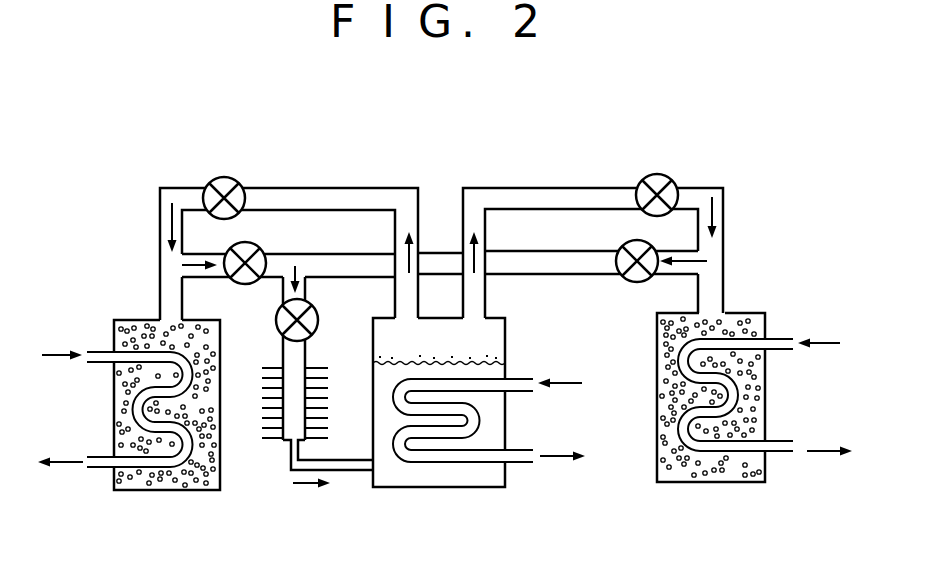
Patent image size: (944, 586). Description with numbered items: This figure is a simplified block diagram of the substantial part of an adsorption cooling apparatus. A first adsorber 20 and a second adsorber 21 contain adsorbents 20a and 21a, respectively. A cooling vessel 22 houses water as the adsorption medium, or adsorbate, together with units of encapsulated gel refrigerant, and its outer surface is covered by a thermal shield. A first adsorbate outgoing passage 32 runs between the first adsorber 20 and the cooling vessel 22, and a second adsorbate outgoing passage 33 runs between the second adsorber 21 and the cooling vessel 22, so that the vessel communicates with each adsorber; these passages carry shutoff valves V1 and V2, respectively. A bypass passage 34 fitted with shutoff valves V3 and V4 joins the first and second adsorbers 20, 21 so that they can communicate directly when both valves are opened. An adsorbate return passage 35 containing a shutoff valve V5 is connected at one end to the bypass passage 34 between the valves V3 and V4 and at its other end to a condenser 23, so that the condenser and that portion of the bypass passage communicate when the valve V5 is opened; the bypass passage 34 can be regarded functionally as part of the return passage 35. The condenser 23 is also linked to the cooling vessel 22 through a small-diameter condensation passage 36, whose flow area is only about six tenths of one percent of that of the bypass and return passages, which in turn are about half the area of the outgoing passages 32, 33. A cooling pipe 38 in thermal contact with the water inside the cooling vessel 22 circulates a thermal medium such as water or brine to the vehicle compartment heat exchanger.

The first adsorber 20 is at (172, 505).
The adsorbent 20a is at (133, 319).
The second adsorber 21 is at (665, 497).
The adsorbent 21a is at (752, 312).
The cooling vessel 22 is at (412, 488).
The condenser 23 is at (292, 426).
The first adsorbate outgoing passage 32 is at (373, 197).
The second adsorbate outgoing passage 33 is at (513, 198).
The bypass passage 34 is at (437, 262).
The adsorbate return passage 35 is at (288, 355).
The condensation passage 36 is at (347, 470).
The cooling pipe 38 is at (508, 373).
The shutoff valve V1 is at (224, 177).
The shutoff valve V2 is at (659, 174).
The shutoff valve V3 is at (257, 243).
The shutoff valve V4 is at (630, 240).
The shutoff valve V5 is at (319, 310).